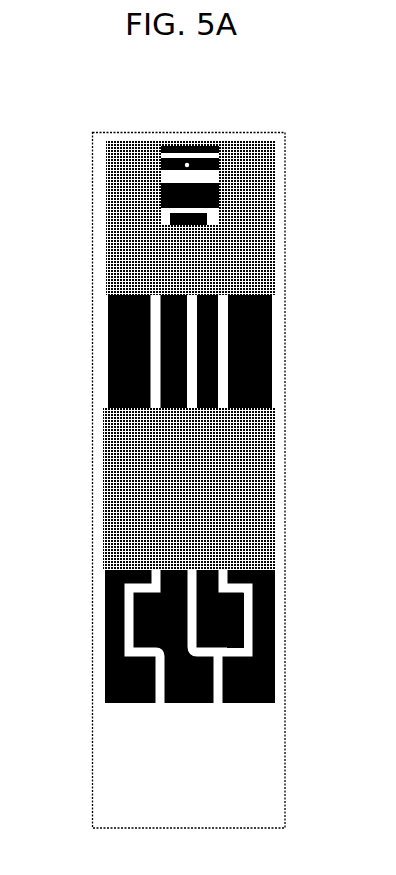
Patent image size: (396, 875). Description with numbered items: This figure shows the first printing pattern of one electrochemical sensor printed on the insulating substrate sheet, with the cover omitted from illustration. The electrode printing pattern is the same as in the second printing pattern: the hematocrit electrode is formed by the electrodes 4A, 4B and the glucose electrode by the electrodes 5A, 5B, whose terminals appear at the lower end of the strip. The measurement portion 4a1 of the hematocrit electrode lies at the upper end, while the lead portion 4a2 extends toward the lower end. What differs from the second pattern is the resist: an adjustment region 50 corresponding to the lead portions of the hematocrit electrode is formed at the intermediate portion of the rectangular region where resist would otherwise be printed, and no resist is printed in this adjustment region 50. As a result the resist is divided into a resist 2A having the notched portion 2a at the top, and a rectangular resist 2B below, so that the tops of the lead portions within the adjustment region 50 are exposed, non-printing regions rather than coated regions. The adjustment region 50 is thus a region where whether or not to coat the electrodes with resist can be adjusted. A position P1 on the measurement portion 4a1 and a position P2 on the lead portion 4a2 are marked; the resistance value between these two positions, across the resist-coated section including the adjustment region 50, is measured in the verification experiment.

The resist 2A is at (108, 223).
The rectangular resist 2B is at (105, 532).
The notched portion 2a is at (210, 147).
The measurement portion 4a1 is at (169, 145).
The lead portion 4a2 is at (103, 630).
The position P1 is at (192, 146).
The position P2 is at (103, 686).
The adjustment region 50 is at (288, 302).
The electrode 5A is at (249, 613).
The electrode 4A is at (138, 712).
The electrode 5B is at (188, 713).
The electrode 4B is at (247, 713).